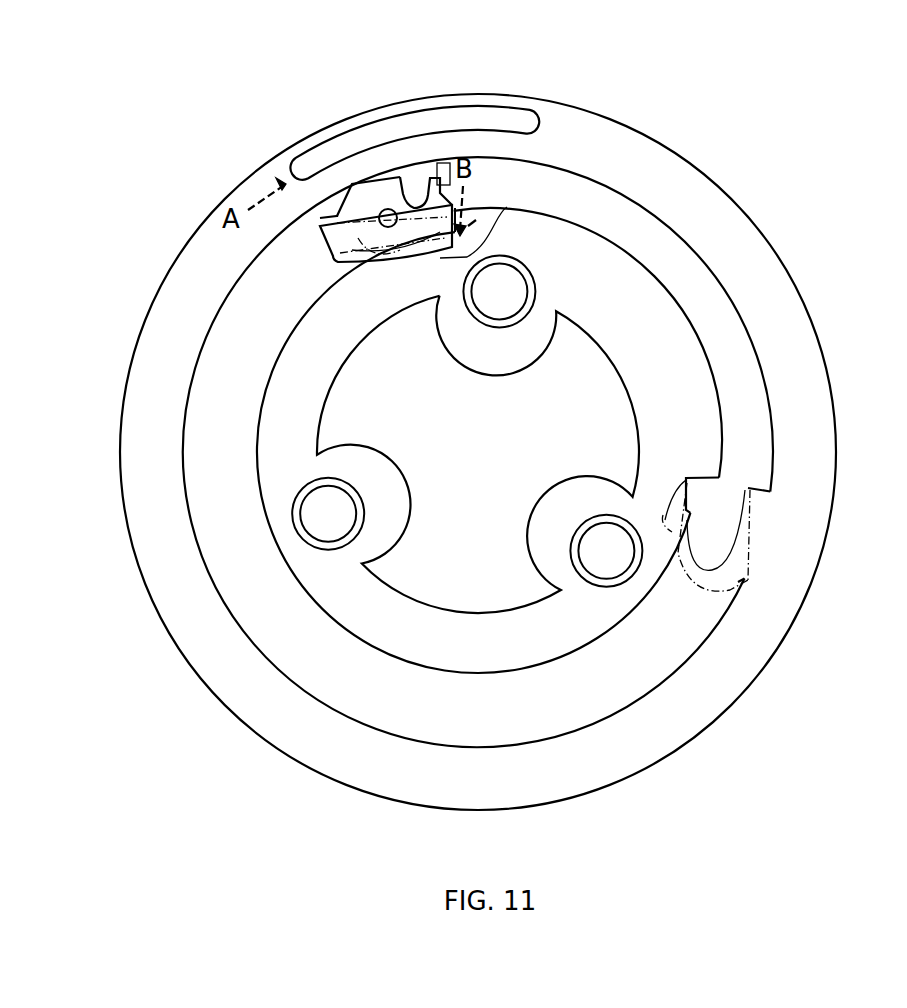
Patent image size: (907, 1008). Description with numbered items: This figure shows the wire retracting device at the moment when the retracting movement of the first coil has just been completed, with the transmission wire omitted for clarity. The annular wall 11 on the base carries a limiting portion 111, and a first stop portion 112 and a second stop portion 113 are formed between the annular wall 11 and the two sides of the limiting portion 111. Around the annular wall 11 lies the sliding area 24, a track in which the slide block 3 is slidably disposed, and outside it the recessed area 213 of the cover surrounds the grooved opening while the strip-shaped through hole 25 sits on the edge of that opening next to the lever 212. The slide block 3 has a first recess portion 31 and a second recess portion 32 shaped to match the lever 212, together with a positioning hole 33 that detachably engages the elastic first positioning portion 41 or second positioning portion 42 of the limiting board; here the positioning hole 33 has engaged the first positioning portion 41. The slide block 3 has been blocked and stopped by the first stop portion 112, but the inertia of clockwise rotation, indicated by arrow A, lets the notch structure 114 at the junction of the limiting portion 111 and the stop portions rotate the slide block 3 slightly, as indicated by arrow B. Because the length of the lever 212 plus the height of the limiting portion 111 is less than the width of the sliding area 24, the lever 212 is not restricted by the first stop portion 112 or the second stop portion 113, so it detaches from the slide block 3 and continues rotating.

The slide block 3 is at (433, 58).
The first recess portion 31 is at (420, 193).
The second recess portion 32 is at (353, 200).
The positioning hole 33 is at (388, 209).
The lever 212 is at (446, 170).
The strip-shaped through hole 25 is at (505, 120).
The first stop portion 112 is at (458, 240).
The notch structure 114 is at (507, 207).
The limiting portion 111 is at (668, 356).
The first positioning portion 41 is at (405, 270).
The second stop portion 113 is at (722, 476).
The second positioning portion 42 is at (638, 490).
The recessed area 213 is at (126, 545).
The annular wall 11 is at (355, 603).
The sliding area 24 is at (618, 675).